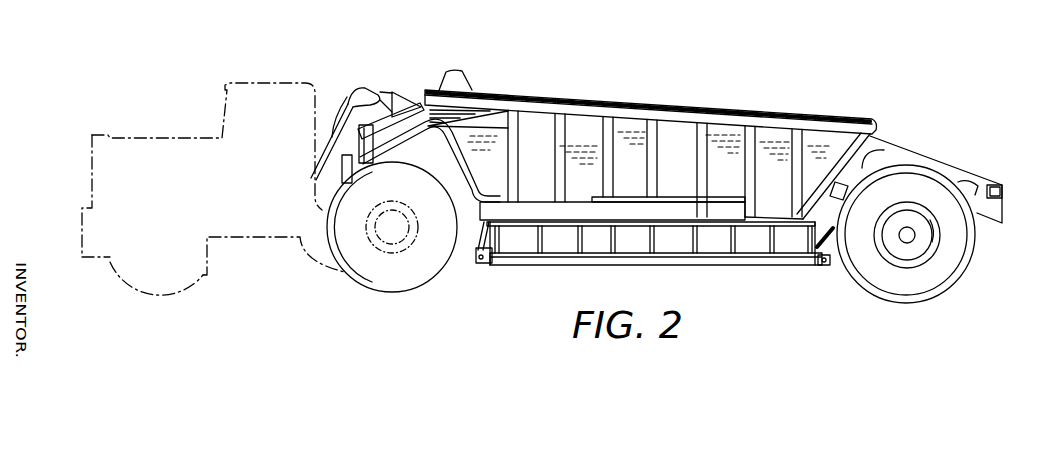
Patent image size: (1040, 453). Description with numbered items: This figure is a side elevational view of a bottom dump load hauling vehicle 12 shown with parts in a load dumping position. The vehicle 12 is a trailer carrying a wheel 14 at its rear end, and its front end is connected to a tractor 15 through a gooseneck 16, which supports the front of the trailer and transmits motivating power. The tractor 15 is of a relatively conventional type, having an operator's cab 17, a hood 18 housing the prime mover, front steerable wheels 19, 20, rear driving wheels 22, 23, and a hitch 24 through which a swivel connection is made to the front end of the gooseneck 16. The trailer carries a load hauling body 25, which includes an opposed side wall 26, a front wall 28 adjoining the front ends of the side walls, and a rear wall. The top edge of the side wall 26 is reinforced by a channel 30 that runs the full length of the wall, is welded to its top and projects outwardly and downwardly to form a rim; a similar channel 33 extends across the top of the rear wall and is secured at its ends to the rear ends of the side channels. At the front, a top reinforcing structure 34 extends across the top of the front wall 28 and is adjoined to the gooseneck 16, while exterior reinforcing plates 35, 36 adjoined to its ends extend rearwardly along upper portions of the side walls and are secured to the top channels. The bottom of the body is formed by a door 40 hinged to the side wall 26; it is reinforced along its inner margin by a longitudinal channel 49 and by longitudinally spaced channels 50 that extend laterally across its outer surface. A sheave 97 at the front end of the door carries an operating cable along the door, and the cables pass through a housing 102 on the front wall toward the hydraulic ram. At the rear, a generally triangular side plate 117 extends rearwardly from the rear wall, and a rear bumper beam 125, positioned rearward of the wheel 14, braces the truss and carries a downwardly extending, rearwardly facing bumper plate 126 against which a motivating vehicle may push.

The bottom dump load hauling vehicle 12 is at (640, 103).
The wheel 14 is at (870, 285).
The tractor 15 is at (222, 111).
The gooseneck 16 is at (415, 100).
The operator's cab 17 is at (277, 82).
The hood 18 is at (127, 135).
The front steerable wheel 19 is at (115, 273).
The front steerable wheel 20 is at (200, 281).
The rear driving wheel 22 is at (312, 258).
The rear driving wheel 23 is at (397, 287).
The hitch 24 is at (347, 122).
The load hauling body 25 is at (582, 98).
The side wall 26 is at (767, 145).
The front wall 28 is at (470, 167).
The channel 30 is at (649, 146).
The channel 33 is at (876, 125).
The top reinforcing structure 34 is at (452, 77).
The exterior reinforcing plate 35 is at (460, 107).
The exterior reinforcing plate 36 is at (490, 118).
The door 40 is at (660, 265).
The channel 49 is at (580, 260).
The channel 50 is at (512, 240).
The sheave 97 is at (485, 262).
The housing 102 is at (488, 206).
The side plate 117 is at (892, 158).
The rear bumper beam 125 is at (998, 186).
The bumper plate 126 is at (1002, 216).